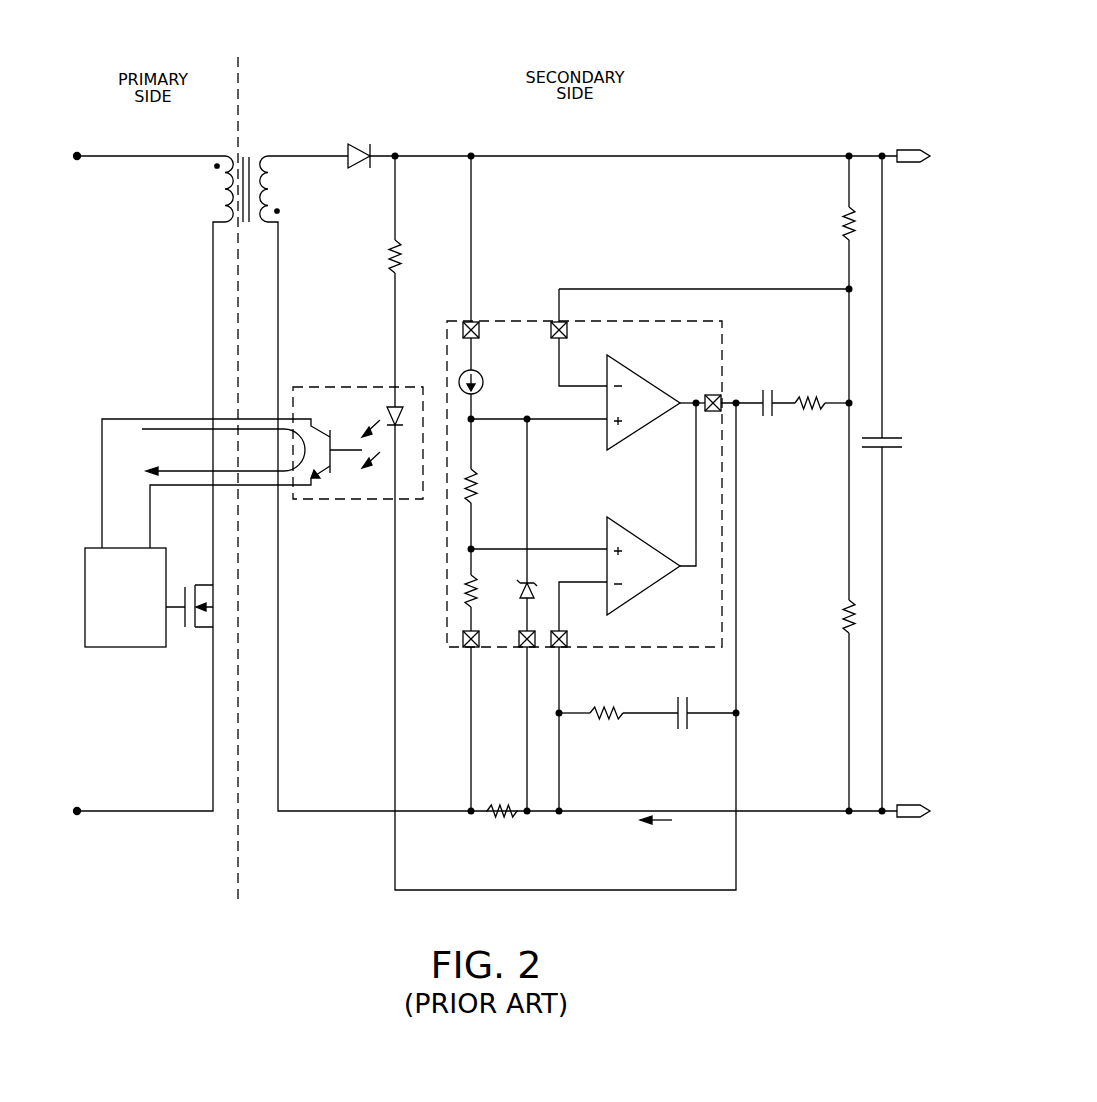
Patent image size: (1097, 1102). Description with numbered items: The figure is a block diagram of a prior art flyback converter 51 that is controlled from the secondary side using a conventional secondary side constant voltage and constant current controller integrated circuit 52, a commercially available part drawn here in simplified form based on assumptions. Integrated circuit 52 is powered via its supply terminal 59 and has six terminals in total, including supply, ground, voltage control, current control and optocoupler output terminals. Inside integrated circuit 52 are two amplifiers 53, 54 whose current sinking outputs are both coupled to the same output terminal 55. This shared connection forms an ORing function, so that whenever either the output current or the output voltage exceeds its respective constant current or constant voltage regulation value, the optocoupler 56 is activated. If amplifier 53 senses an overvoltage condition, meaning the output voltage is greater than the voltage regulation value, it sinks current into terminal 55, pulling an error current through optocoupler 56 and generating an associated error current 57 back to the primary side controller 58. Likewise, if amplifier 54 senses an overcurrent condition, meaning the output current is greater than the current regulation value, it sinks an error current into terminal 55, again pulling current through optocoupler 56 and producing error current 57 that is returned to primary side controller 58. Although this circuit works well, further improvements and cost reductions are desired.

The flyback converter 51 is at (733, 44).
The secondary side CV-CC controller integrated circuit 52 is at (722, 340).
The amplifier 53 is at (642, 378).
The amplifier 54 is at (642, 541).
The output terminal OPTO 55 is at (722, 401).
The optocoupler 56 is at (346, 386).
The error current 57 is at (223, 452).
The primary side controller 58 is at (130, 547).
The VCC terminal 59 is at (478, 322).